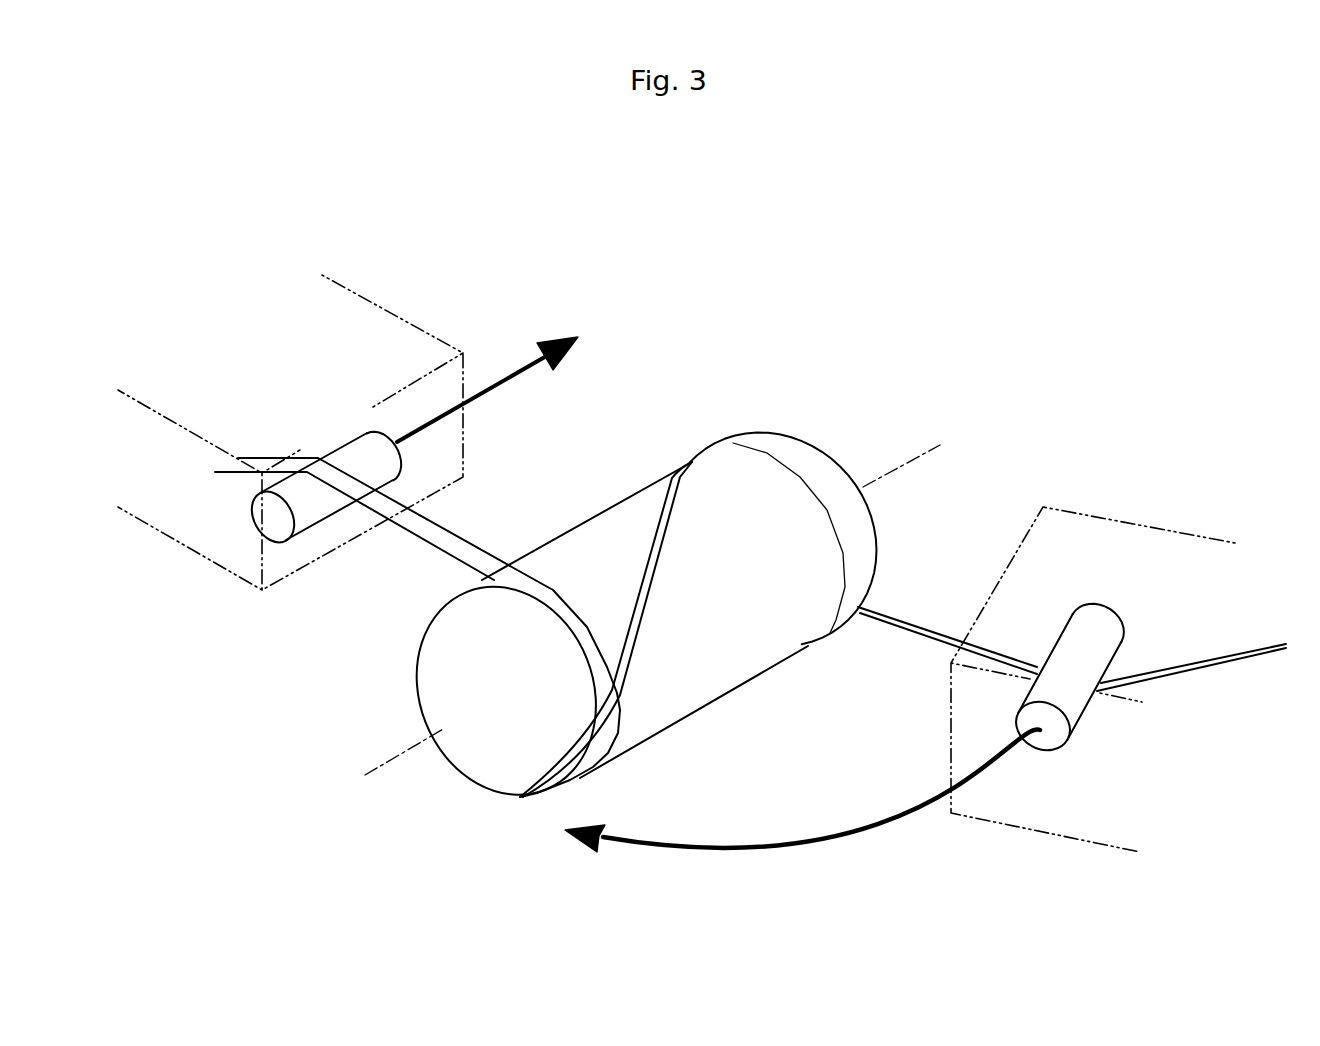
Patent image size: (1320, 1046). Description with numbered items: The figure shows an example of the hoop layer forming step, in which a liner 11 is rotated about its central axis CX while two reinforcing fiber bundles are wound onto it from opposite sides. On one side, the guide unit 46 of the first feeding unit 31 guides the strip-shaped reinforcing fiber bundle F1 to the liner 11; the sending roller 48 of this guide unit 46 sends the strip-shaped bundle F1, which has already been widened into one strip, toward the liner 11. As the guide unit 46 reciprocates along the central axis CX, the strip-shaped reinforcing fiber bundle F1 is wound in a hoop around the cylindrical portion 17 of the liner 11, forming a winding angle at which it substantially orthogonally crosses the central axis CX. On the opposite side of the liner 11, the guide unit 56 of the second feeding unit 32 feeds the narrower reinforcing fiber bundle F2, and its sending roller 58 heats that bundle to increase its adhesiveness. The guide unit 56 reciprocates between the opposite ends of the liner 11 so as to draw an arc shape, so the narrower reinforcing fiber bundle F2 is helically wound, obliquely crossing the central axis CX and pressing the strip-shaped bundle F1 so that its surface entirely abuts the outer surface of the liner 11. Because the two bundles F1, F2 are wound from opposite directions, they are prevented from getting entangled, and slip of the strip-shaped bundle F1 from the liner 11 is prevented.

The liner 11 is at (780, 445).
The cylindrical portion 17 is at (637, 512).
The first feeding unit 31 is at (492, 323).
The second feeding unit 32 is at (1053, 470).
The guide unit 46 is at (402, 315).
The sending roller 48 is at (308, 512).
The guide unit 56 is at (1158, 527).
The sending roller 58 is at (1076, 706).
The central axis CX is at (918, 450).
The strip-shaped reinforcing fiber bundle F1 is at (455, 543).
The narrower reinforcing fiber bundle F2 is at (902, 610).